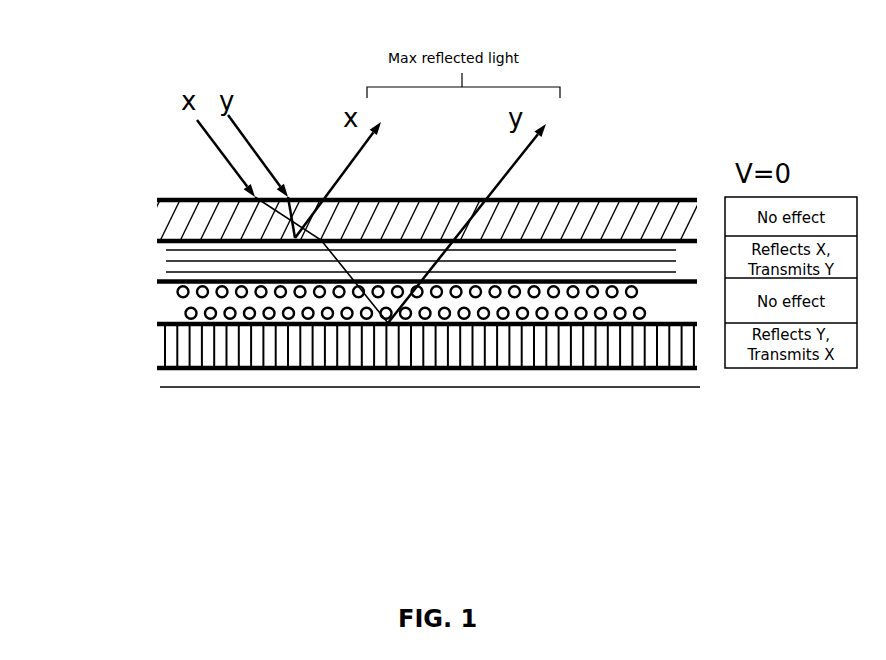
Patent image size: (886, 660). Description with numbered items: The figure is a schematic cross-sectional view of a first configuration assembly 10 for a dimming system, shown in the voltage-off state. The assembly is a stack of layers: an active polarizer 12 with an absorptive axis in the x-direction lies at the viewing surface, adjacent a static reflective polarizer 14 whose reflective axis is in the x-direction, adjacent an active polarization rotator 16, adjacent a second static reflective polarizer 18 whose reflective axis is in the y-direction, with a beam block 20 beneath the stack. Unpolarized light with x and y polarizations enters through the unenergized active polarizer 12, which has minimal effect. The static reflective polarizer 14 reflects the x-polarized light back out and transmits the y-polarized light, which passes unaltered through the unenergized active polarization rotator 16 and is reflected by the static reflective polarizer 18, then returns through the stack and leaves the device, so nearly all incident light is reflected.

The first configuration assembly 10 is at (76, 149).
The active polarizer 12 is at (155, 222).
The static reflective polarizer 14 is at (155, 265).
The active polarization rotator 16 is at (155, 306).
The static reflective polarizer 18 is at (155, 348).
The beam block 20 is at (155, 388).